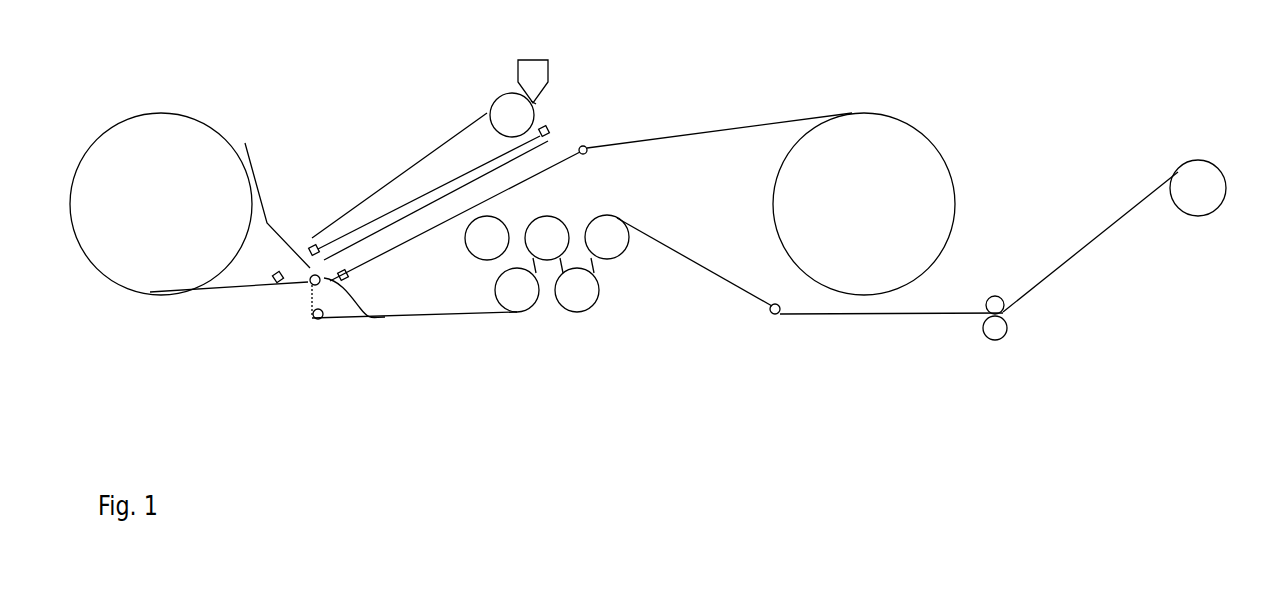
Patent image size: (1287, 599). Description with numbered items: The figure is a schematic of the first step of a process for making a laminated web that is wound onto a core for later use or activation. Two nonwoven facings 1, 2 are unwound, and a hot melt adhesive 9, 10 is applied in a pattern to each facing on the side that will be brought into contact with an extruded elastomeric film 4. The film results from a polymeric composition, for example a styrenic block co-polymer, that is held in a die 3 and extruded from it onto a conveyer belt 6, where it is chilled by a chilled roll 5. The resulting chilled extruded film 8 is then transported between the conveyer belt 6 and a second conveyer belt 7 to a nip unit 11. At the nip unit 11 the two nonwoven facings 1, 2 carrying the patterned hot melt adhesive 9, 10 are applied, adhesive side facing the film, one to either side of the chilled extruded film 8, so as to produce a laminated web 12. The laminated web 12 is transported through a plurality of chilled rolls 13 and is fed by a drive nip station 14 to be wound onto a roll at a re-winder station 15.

The nonwoven facing 1 is at (192, 117).
The nonwoven facing 2 is at (907, 121).
The die 3 is at (552, 57).
The extruded elastomeric film 4 is at (539, 99).
The chilled roll 5 is at (497, 95).
The conveyer belt 6 is at (477, 118).
The conveyer belt 7 is at (553, 124).
The chilled extruded film 8 is at (245, 143).
The hot melt adhesive 9 is at (195, 304).
The hot melt adhesive 10 is at (338, 285).
The nip unit 11 is at (304, 285).
The laminated web 12 is at (336, 321).
The chilled rolls 13 is at (550, 304).
The drive nip station 14 is at (1008, 341).
The re-winder station 15 is at (1220, 158).